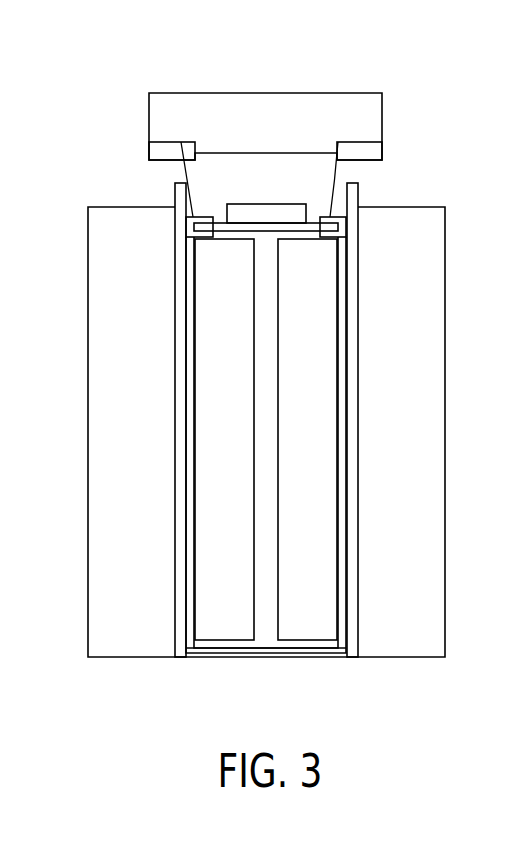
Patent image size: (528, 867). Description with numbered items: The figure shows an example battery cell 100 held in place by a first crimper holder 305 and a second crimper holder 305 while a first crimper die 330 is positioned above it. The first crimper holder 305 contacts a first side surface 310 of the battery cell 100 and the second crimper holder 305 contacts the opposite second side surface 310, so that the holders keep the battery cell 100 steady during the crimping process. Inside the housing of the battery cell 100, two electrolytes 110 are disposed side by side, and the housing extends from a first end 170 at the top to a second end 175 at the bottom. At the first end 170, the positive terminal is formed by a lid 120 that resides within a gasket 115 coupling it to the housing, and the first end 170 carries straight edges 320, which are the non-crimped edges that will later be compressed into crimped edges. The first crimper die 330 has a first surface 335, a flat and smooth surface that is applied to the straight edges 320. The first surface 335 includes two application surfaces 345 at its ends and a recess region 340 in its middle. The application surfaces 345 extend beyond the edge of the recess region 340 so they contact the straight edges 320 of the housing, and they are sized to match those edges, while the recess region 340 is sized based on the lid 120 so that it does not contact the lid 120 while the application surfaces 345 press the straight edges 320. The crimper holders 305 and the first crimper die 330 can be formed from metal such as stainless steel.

The battery cell 100 is at (348, 657).
The electrolyte 110 is at (215, 627).
The gasket 115 is at (181, 142).
The lid 120 is at (259, 210).
The first end 170 is at (358, 218).
The second end 175 is at (358, 632).
The crimper holder 305 is at (105, 347).
The side surface 310 is at (175, 515).
The straight edges 320 is at (175, 190).
The first crimper die 330 is at (360, 112).
The first surface 335 is at (225, 152).
The recess region 340 is at (283, 152).
The application surface 345 is at (163, 162).